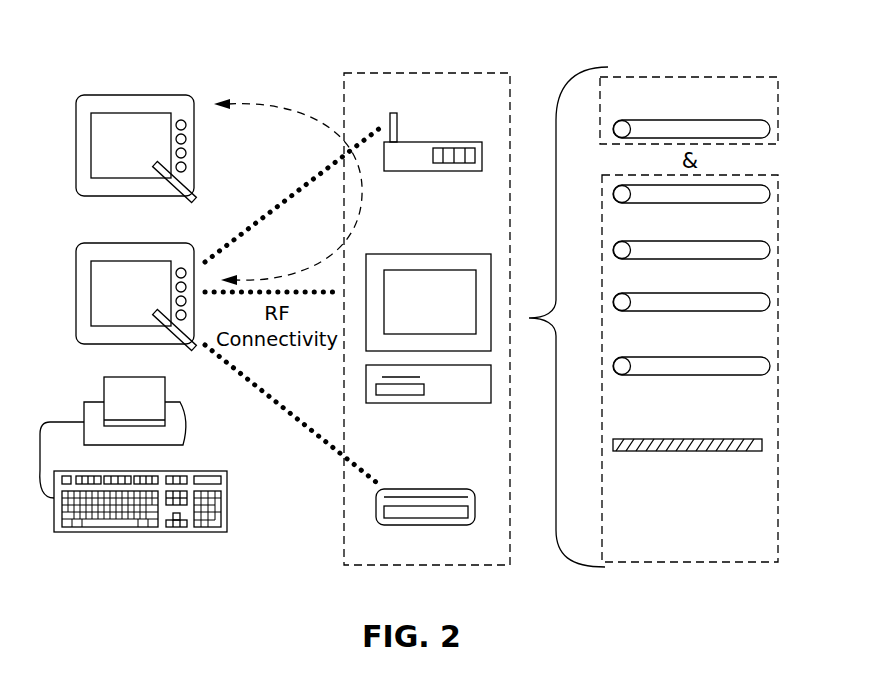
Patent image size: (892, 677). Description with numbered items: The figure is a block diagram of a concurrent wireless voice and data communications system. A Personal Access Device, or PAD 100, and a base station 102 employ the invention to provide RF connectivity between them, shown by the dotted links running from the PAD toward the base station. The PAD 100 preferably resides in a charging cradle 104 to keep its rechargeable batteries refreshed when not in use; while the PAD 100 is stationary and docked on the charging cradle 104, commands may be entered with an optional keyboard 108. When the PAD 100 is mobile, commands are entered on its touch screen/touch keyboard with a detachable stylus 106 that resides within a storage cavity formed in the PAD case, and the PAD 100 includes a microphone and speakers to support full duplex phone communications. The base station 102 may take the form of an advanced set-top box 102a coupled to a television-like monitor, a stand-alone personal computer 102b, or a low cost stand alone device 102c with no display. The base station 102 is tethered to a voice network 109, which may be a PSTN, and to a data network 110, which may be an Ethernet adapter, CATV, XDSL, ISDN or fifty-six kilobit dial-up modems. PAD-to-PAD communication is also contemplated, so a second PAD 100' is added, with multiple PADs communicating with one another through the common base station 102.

The second PAD 100' is at (136, 149).
The Personal Access Device (PAD) 100 is at (135, 293).
The base station 102 is at (440, 450).
The advanced set-top box 102a is at (402, 171).
The stand-alone personal computer 102b is at (453, 313).
The low cost stand alone device 102c is at (402, 525).
The charging cradle 104 is at (117, 406).
The detachable stylus 106 is at (196, 352).
The keyboard 108 is at (227, 508).
The voice network 109 is at (778, 115).
The data network 110 is at (672, 552).